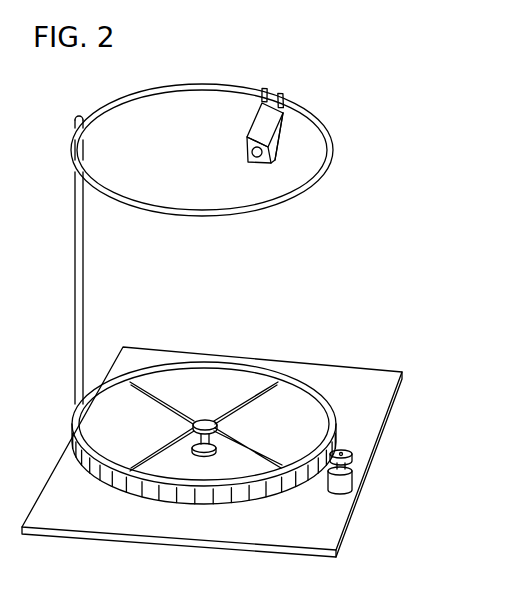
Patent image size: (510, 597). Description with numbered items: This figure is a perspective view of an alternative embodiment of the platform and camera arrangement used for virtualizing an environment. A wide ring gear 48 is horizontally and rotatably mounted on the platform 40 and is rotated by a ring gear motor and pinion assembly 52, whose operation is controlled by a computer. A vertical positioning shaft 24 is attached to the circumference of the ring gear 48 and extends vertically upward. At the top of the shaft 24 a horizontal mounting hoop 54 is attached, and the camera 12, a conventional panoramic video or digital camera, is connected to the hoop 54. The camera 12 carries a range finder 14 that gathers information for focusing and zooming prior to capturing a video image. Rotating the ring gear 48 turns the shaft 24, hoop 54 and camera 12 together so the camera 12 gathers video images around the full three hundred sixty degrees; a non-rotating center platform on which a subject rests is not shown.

The camera 12 is at (246, 149).
The range finder 14 is at (285, 140).
The horizontal mounting hoop 54 is at (300, 191).
The vertical positioning shaft 24 is at (80, 283).
The ring gear 48 is at (298, 380).
The platform 40 is at (293, 533).
The ring gear motor and pinion assembly 52 is at (353, 487).